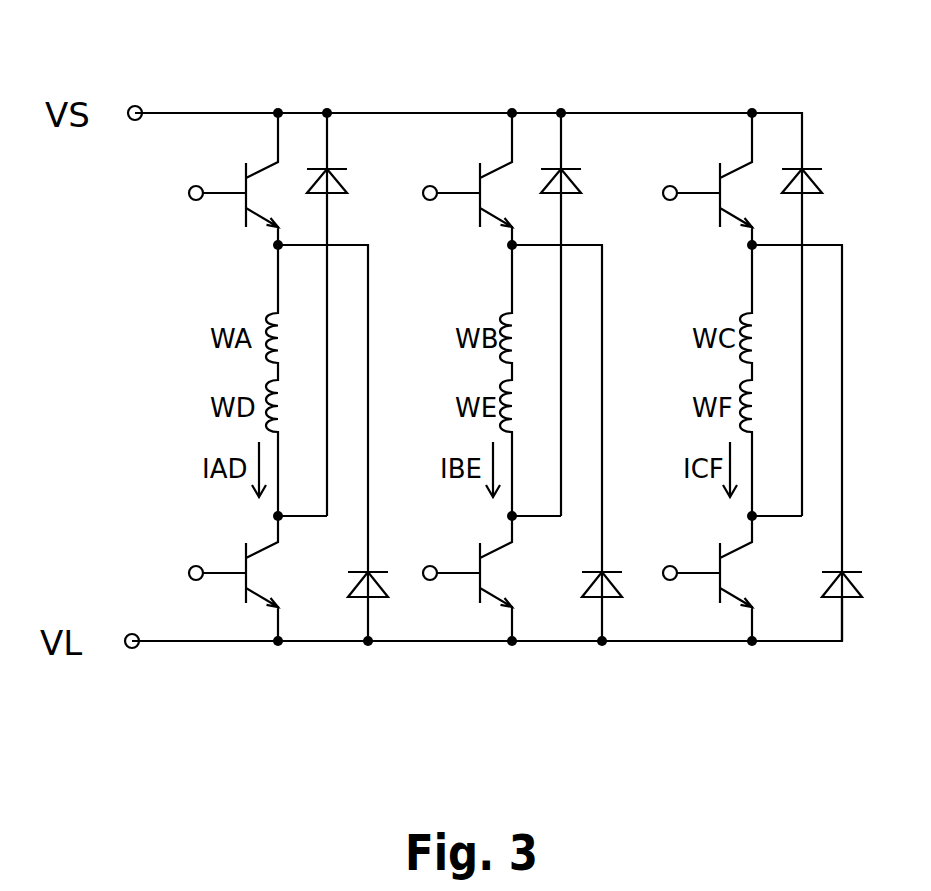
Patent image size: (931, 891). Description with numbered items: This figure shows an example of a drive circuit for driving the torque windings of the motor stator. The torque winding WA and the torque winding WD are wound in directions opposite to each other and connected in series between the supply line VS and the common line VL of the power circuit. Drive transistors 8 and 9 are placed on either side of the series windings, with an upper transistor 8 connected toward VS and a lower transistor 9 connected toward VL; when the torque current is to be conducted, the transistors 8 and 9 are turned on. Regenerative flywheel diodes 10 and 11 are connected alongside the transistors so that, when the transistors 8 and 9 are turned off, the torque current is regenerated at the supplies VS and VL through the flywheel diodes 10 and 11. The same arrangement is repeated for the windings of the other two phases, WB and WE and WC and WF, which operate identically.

The drive transistor 8 is at (265, 163).
The drive transistor 9 is at (257, 600).
The regenerative flywheel diode 10 is at (338, 162).
The regenerative flywheel diode 11 is at (383, 605).